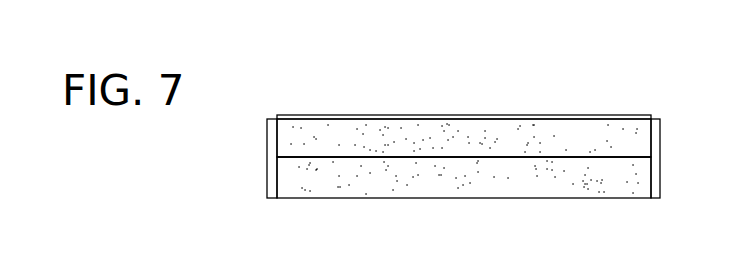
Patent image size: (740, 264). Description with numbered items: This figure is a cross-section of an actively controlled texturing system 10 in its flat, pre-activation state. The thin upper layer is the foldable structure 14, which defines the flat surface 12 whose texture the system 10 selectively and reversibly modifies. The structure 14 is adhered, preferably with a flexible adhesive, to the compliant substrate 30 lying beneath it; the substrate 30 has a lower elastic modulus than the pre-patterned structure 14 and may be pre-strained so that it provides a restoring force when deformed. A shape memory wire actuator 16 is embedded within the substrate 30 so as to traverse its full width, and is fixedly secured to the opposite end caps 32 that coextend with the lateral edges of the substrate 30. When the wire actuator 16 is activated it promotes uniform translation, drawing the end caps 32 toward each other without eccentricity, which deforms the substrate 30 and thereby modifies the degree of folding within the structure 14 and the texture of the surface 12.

The texturing system 10 is at (432, 130).
The surface 12 is at (595, 117).
The foldable structure 14 is at (352, 113).
The shape memory wire actuator 16 is at (323, 157).
The compliant substrate 30 is at (606, 176).
The end caps 32 is at (268, 145).